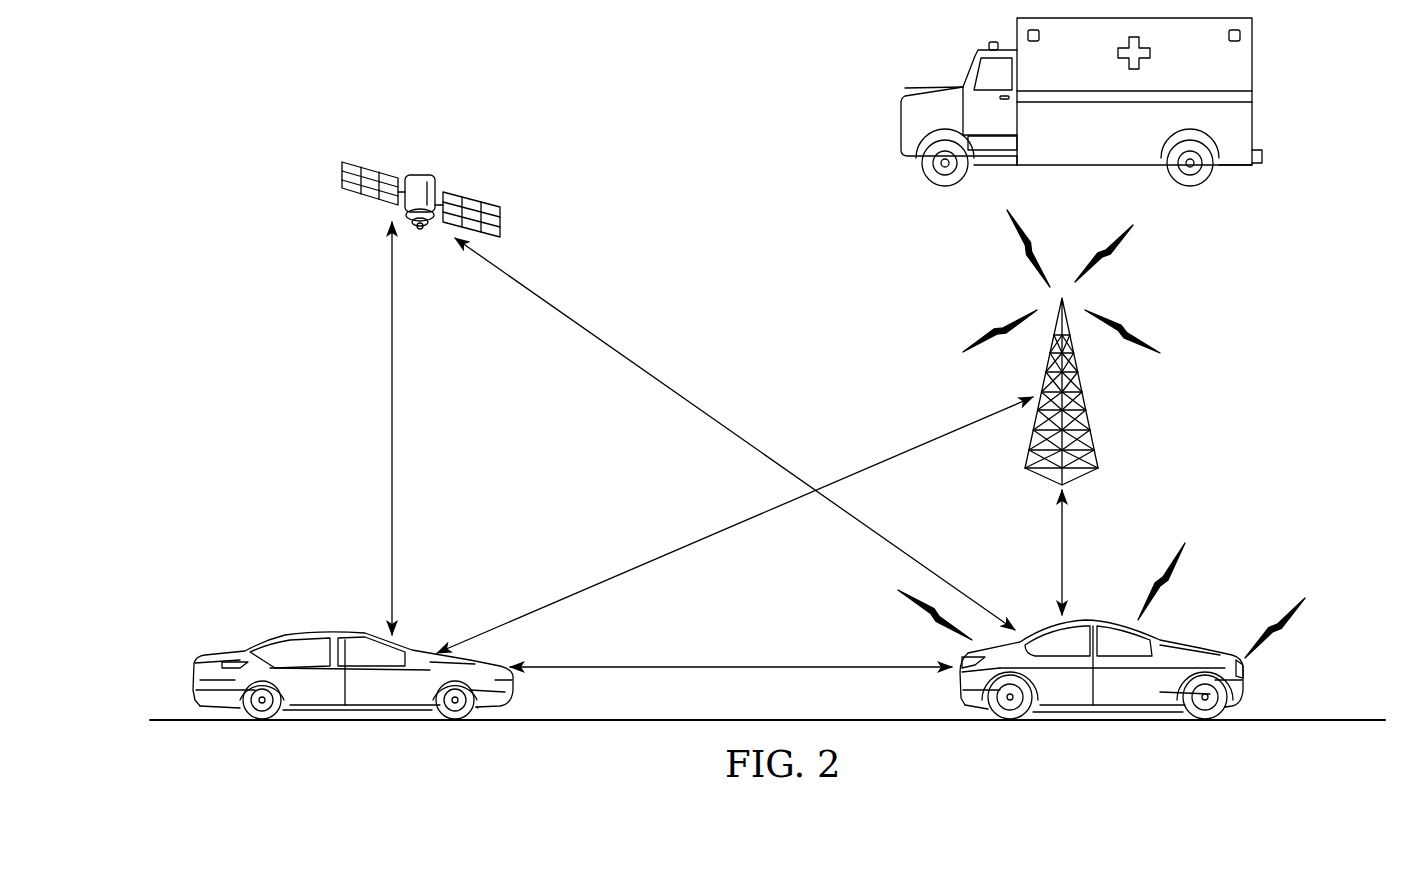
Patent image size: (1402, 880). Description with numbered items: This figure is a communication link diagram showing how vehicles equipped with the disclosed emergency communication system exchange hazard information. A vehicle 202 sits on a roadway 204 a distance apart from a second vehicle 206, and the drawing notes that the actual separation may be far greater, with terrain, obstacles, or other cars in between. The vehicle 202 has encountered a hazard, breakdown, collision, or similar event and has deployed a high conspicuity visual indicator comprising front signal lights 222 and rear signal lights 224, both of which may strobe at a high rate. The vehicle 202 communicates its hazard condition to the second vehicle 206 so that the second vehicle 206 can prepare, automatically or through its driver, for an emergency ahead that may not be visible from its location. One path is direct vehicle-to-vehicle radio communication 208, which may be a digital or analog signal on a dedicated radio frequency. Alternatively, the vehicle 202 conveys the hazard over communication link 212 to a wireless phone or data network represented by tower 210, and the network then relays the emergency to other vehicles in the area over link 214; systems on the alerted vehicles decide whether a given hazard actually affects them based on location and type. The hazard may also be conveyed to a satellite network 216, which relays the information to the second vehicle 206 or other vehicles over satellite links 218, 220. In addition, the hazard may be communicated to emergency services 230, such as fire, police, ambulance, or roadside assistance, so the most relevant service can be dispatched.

The vehicle 202 is at (1200, 648).
The roadway 204 is at (1340, 718).
The second vehicle 206 is at (335, 633).
The radio communication 208 is at (740, 667).
The tower 210 is at (1092, 425).
The communication link 212 is at (1063, 547).
The link 214 is at (755, 515).
The satellite network 216 is at (420, 172).
The satellite communication link to vehicle 218 is at (738, 433).
The satellite communication link to second vehicle 220 is at (390, 408).
The front signal lights 222 is at (1245, 668).
The rear signal lights 224 is at (958, 657).
The emergency services 230 is at (1252, 72).